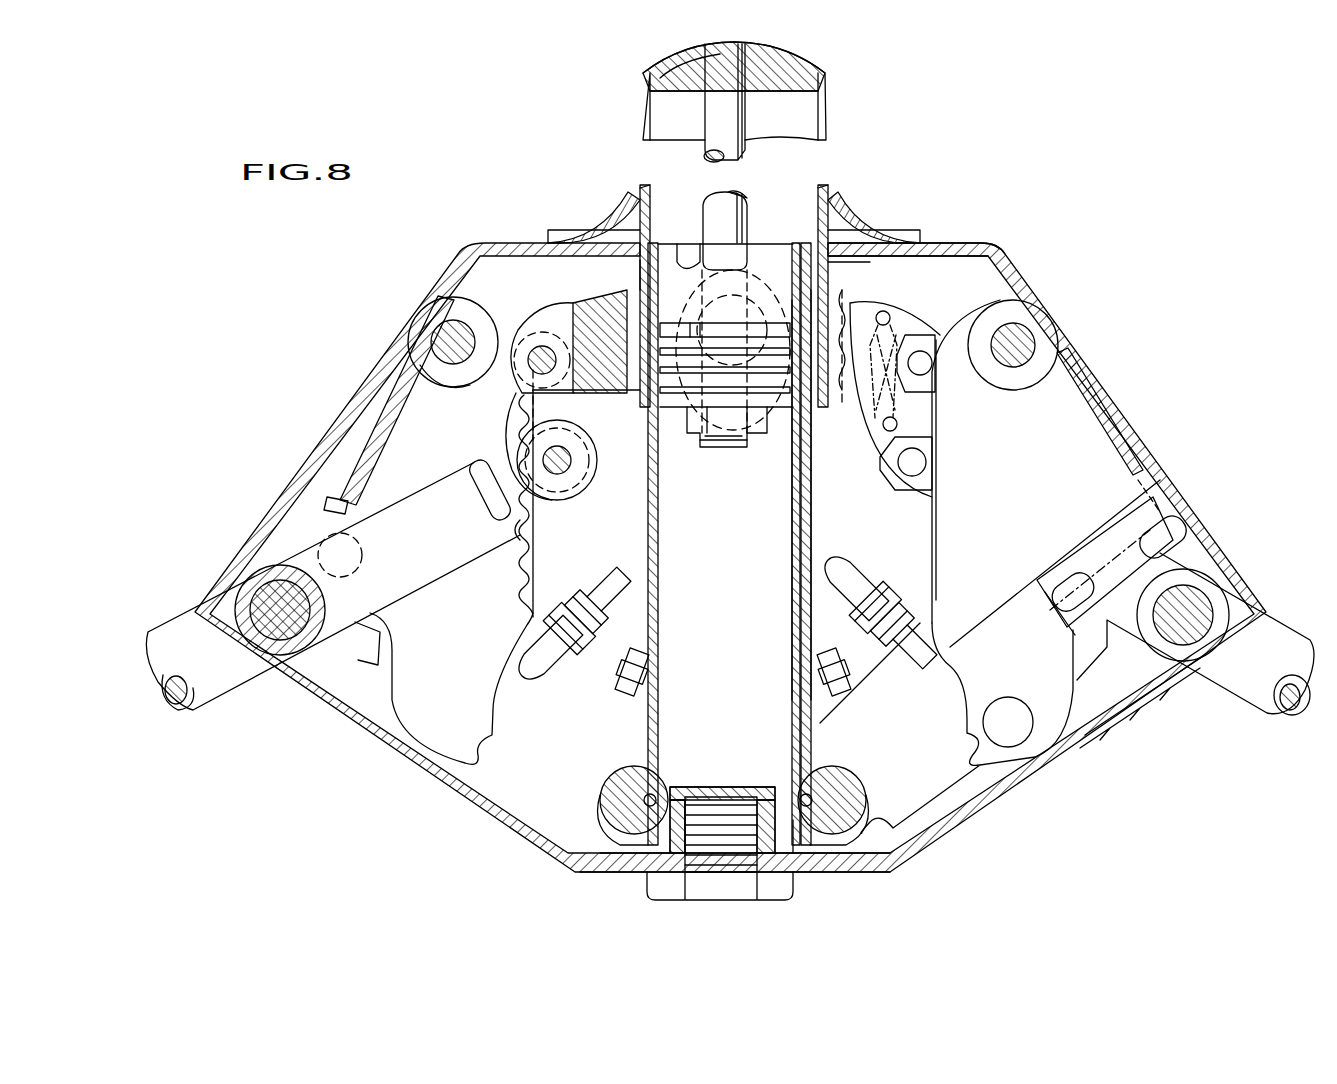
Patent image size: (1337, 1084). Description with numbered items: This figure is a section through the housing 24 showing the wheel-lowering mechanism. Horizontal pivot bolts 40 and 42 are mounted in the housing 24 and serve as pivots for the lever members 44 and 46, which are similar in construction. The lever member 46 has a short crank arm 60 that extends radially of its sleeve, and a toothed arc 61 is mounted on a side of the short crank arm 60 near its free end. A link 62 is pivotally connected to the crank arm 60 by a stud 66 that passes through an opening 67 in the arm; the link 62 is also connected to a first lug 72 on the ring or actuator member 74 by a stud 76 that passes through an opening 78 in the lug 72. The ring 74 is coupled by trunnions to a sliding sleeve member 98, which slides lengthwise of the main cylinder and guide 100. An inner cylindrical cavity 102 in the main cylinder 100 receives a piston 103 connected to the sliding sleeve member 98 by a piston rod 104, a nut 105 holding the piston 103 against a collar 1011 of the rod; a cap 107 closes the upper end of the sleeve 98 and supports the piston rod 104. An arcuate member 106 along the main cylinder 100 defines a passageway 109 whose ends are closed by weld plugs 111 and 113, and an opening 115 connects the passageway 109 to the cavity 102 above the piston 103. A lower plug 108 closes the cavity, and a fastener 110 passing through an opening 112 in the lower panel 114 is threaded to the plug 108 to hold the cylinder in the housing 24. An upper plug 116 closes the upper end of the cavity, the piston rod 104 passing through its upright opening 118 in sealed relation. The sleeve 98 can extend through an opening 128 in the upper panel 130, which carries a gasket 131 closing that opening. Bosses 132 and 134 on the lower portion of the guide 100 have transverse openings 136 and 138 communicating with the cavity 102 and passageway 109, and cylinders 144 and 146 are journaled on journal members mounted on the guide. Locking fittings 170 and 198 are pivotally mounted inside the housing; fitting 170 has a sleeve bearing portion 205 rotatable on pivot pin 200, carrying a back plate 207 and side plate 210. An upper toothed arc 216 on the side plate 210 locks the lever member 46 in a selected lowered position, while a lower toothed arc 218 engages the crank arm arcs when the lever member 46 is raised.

The housing 24 is at (1095, 343).
The horizontal pivot bolt 40 is at (1195, 600).
The horizontal pivot bolt 42 is at (245, 615).
The lever member 44 is at (1260, 700).
The lever member 46 is at (245, 690).
The short crank arm 60 is at (450, 545).
The toothed arc 61 is at (486, 496).
The link 62 is at (597, 440).
The stud 66 is at (568, 470).
The opening 67 is at (540, 425).
The first lug 72 is at (558, 318).
The ring or actuator member 74 is at (590, 318).
The stud 76 is at (542, 345).
The opening 78 is at (575, 368).
The sliding sleeve member or actuator 98 is at (828, 118).
The main cylinder and guide 100 is at (640, 542).
The inner cylindrical cavity 102 is at (660, 473).
The piston 103 is at (690, 420).
The piston rod 104 is at (718, 128).
The nut 105 is at (760, 425).
The arcuate member 106 is at (812, 486).
The cap 107 is at (790, 62).
The lower plug 108 is at (695, 790).
The passageway 109 is at (805, 510).
The fastener 110 is at (795, 885).
The weld plug 111 is at (800, 243).
The opening 112 is at (692, 868).
The weld plug 113 is at (840, 815).
The lower panel 114 is at (870, 862).
The opening 115 is at (900, 306).
The upper plug 116 is at (668, 256).
The upright opening 118 is at (742, 262).
The opening 128 is at (840, 268).
The upper panel 130 is at (930, 245).
The gasket 131 is at (835, 200).
The boss 132 is at (625, 790).
The boss 134 is at (842, 770).
The transverse opening 136 is at (652, 790).
The transverse opening 138 is at (805, 793).
The cylinder 144 is at (365, 652).
The cylinder 146 is at (1080, 655).
The locking fitting 170 is at (543, 562).
The locking fitting 198 is at (924, 551).
The pivot pin 200 is at (438, 330).
The sleeve bearing portion 205 is at (470, 385).
The back plate 207 is at (378, 452).
The side plate 210 is at (522, 533).
The upper toothed arc 216 is at (532, 600).
The lower toothed arc 218 is at (492, 735).
The collar 1011 is at (830, 310).